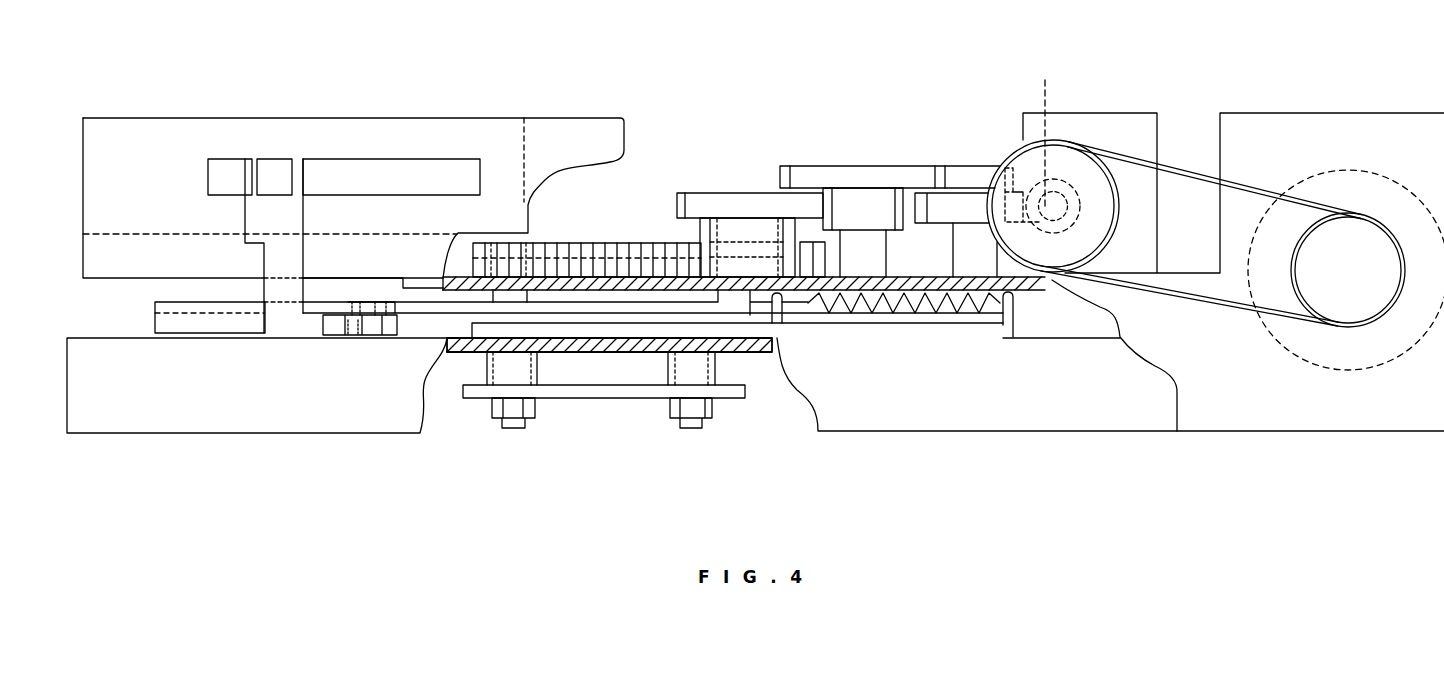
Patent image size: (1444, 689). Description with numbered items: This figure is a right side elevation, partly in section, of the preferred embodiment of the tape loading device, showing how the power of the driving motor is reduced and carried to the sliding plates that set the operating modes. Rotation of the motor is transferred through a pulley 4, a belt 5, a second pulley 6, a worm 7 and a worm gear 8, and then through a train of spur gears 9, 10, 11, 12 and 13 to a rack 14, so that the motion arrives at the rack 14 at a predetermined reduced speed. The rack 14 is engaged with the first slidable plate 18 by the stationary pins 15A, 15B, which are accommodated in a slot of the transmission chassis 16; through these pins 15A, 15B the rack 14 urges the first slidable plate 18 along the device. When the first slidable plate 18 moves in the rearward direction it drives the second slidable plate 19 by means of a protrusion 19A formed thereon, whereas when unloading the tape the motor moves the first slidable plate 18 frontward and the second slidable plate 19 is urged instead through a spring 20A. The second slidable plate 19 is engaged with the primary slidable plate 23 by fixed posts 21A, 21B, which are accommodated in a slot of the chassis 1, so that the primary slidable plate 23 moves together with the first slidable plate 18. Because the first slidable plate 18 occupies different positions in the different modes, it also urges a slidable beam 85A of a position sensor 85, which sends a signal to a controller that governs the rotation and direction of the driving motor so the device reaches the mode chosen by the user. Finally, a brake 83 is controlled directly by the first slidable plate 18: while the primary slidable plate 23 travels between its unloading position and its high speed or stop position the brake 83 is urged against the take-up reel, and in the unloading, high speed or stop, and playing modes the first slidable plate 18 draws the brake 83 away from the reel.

The chassis 1 is at (1077, 402).
The pulley 4 is at (1327, 258).
The belt 5 is at (1188, 172).
The pulley 6 is at (1093, 183).
The worm 7 is at (1045, 134).
The worm gear 8 is at (968, 213).
The spur gear 9 is at (958, 170).
The spur gear 10 is at (875, 172).
The spur gear 11 is at (845, 200).
The spur gear 12 is at (762, 200).
The spur gear 13 is at (722, 228).
The rack 14 is at (577, 247).
The stationary pin 15A is at (733, 295).
The stationary pin 15B is at (510, 300).
The transmission chassis 16 is at (556, 130).
The first slidable plate 18 is at (185, 323).
The second slidable plate 19 is at (955, 325).
The protrusion 19A is at (778, 313).
The spring 20A is at (890, 305).
The fixed post 21A is at (687, 425).
The fixed post 21B is at (510, 430).
The primary slidable plate 23 is at (553, 397).
The brake 83 is at (325, 340).
The position sensor 85 is at (503, 222).
The slidable beam 85A is at (267, 172).